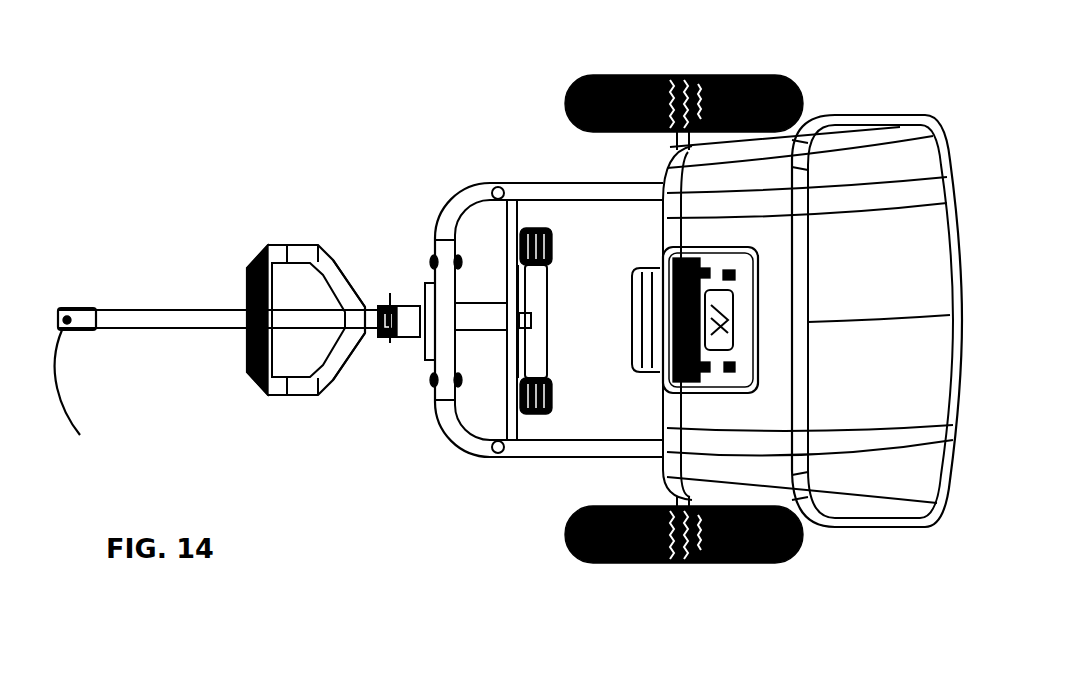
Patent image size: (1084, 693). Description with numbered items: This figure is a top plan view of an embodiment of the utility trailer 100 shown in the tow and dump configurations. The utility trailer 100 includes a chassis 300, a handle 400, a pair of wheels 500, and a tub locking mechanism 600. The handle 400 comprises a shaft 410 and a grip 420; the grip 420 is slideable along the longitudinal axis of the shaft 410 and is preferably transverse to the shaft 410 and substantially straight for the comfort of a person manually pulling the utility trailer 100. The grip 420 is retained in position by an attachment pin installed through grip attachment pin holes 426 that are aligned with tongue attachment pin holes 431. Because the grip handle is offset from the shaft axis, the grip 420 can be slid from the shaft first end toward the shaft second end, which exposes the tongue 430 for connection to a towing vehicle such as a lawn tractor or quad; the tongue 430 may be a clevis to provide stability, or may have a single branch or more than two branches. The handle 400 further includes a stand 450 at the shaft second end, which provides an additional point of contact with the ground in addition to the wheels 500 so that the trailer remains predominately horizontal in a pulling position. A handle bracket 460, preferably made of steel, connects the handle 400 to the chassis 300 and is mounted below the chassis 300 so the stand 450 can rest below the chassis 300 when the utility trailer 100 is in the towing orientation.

The utility trailer 100 is at (284, 88).
The chassis 300 is at (520, 185).
The handle 400 is at (228, 218).
The shaft 410 is at (228, 328).
The grip 420 is at (275, 390).
The grip attachment pin holes 426 is at (342, 290).
The tongue 430 is at (80, 312).
The tongue attachment pin holes 431 is at (104, 411).
The stand 450 is at (537, 288).
The handle bracket 460 is at (387, 295).
The wheels 500 is at (566, 97).
The tub locking mechanism 600 is at (643, 370).